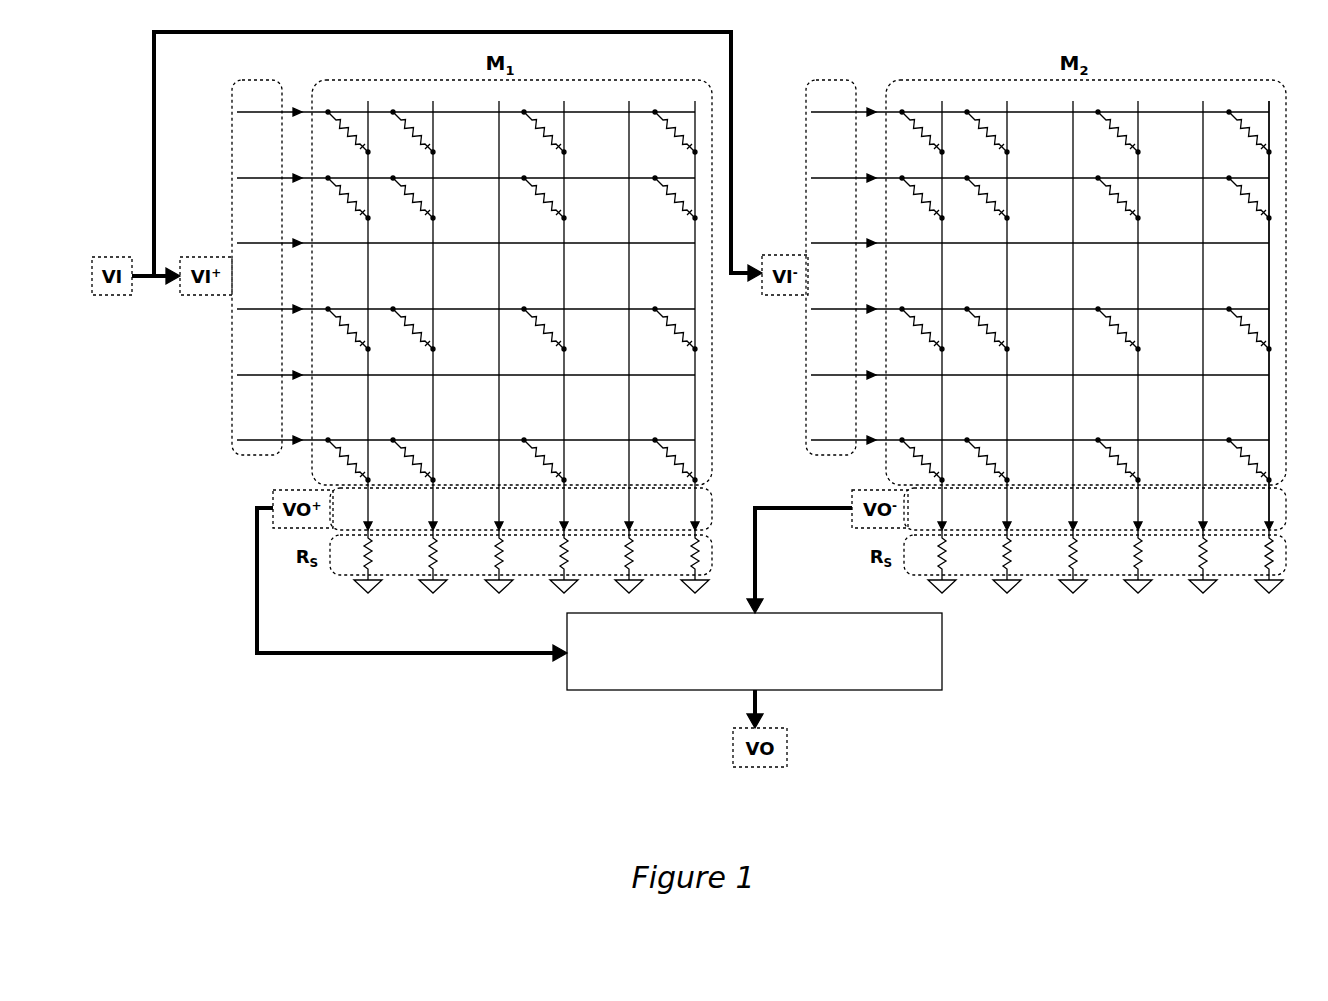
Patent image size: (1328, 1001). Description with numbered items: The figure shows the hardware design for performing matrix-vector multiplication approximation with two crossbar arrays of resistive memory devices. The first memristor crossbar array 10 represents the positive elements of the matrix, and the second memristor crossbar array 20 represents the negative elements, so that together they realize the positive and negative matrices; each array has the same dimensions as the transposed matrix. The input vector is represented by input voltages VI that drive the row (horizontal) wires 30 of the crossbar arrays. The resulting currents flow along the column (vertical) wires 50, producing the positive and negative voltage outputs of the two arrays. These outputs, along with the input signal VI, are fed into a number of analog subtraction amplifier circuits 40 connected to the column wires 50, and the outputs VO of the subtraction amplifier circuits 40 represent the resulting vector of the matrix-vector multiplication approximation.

The memristor crossbar array M1 10 is at (719, 390).
The memristor crossbar array M2 20 is at (1226, 69).
The row wires 30 is at (270, 96).
The analog subtraction amplifier circuits 40 is at (612, 704).
The column wires 50 is at (1282, 267).